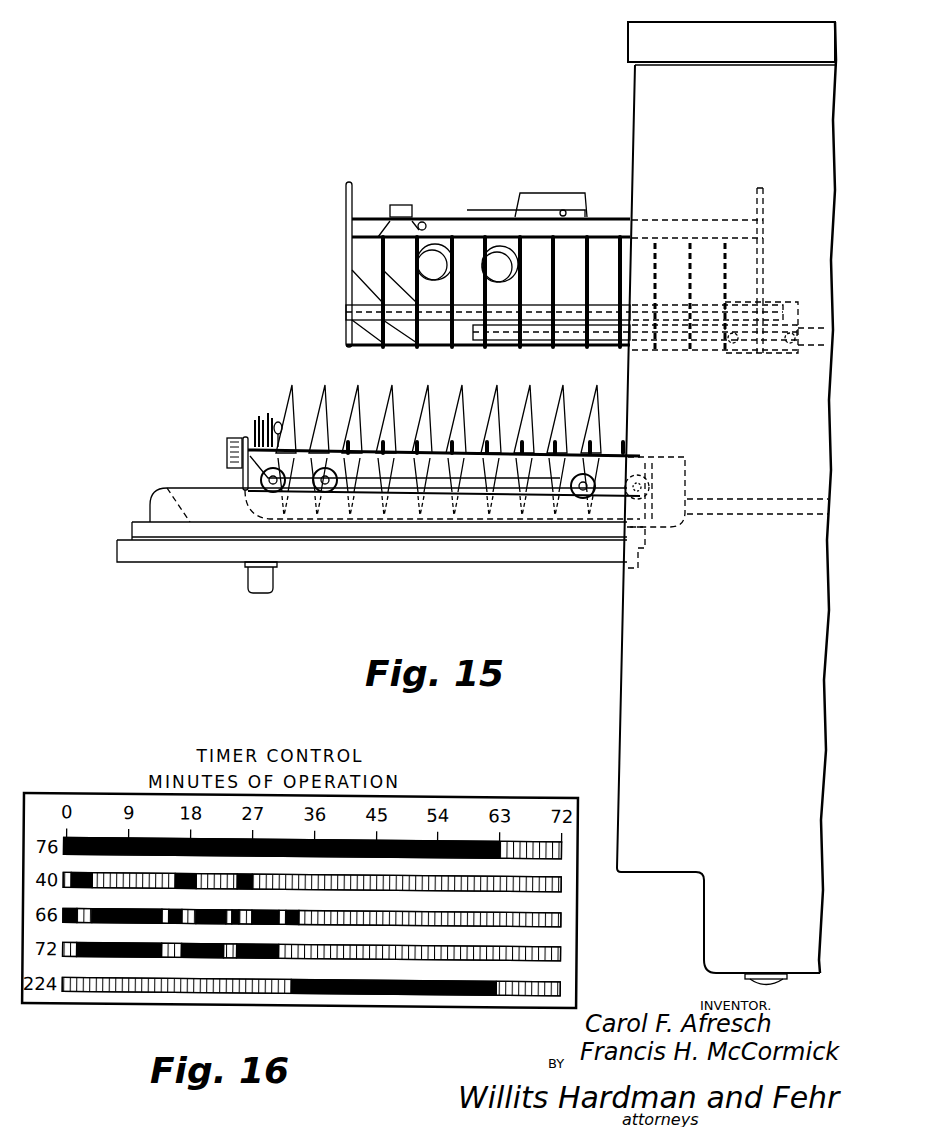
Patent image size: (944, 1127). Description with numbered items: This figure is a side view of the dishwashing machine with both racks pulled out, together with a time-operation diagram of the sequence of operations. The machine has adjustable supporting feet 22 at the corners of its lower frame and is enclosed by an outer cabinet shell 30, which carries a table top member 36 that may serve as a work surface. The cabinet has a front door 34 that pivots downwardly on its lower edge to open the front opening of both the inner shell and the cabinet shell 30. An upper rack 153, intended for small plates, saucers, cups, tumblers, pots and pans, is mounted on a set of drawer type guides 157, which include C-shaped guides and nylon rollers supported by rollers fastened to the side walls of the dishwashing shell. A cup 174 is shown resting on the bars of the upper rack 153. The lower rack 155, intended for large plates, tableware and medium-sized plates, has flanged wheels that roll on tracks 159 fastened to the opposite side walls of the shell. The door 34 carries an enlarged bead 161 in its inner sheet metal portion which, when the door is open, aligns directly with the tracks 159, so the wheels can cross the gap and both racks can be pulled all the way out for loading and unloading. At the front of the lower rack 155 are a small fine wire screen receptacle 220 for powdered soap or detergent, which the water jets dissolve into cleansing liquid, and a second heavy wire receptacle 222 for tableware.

The adjustable supporting feet 22 is at (747, 981).
The outer cabinet shell 30 is at (635, 125).
The front door 34 is at (233, 562).
The table top member 36 is at (628, 38).
The upper rack 153 is at (347, 203).
The lower rack 155 is at (434, 394).
The drawer type guides 157 is at (531, 341).
The tracks 159 is at (768, 515).
The enlarged bead 161 is at (160, 496).
The cup 174 is at (400, 205).
The receptacle for powdered soap or detergent 220 is at (227, 450).
The receptacle for tableware 222 is at (262, 440).